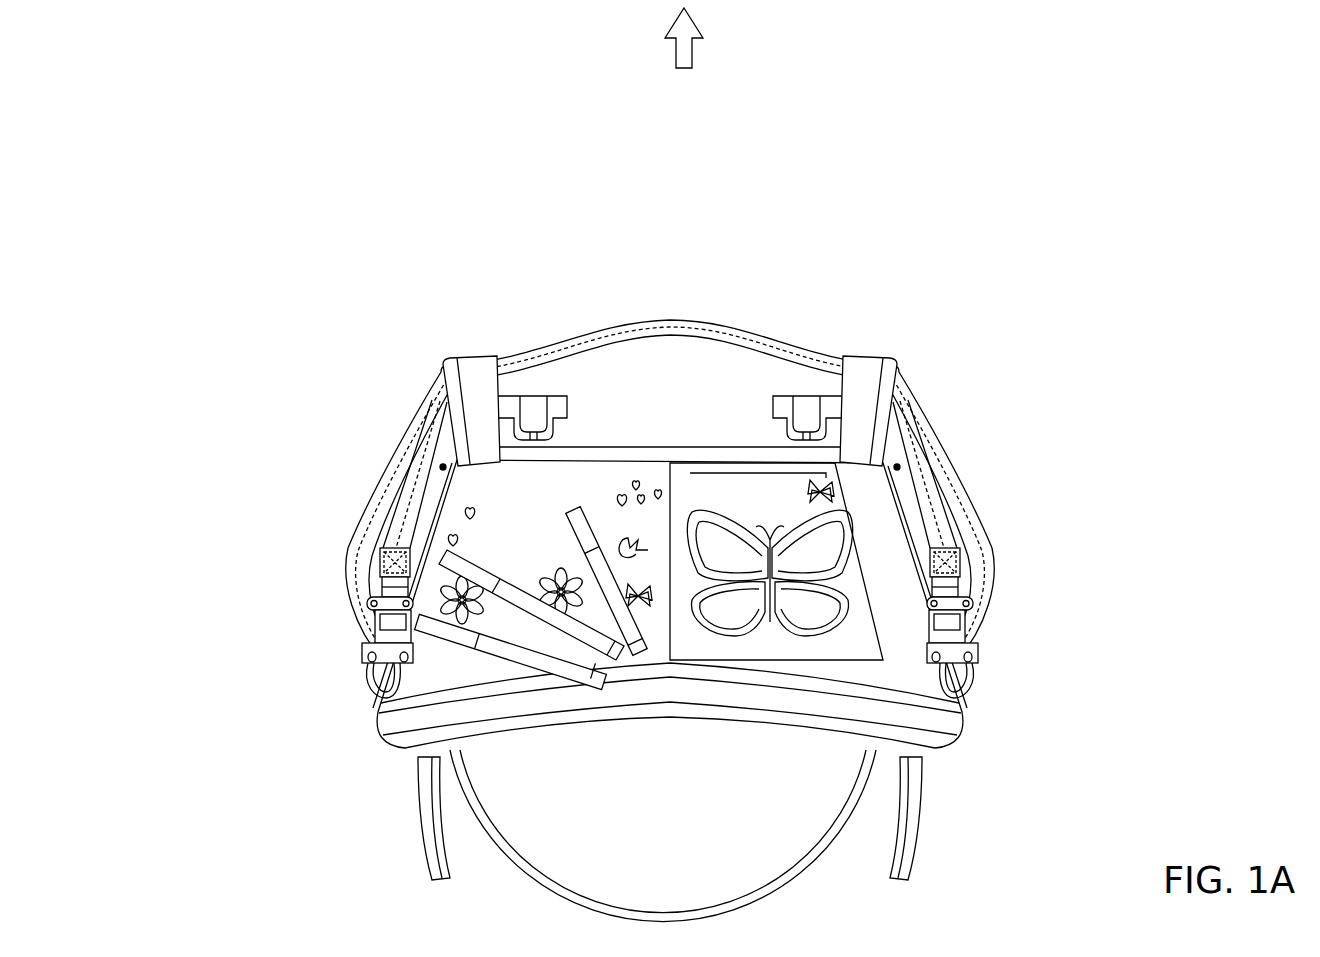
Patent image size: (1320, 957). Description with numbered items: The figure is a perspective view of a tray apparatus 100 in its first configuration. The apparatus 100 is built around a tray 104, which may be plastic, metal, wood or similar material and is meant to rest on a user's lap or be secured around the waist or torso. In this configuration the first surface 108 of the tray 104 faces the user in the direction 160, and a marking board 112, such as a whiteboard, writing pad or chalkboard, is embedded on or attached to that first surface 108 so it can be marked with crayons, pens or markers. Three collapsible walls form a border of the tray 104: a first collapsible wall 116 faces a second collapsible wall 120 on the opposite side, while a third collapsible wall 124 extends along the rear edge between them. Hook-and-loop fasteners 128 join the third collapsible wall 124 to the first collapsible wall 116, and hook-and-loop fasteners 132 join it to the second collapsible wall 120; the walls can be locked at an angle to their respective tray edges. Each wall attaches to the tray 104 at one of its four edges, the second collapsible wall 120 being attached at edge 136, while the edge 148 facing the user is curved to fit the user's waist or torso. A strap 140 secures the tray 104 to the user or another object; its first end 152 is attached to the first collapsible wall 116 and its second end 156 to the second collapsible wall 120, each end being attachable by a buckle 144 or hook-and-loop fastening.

The tray apparatus 100 is at (238, 108).
The tray 104 is at (633, 712).
The first surface 108 is at (460, 668).
The marking board 112 is at (763, 510).
The first collapsible wall 116 is at (353, 537).
The second collapsible wall 120 is at (990, 553).
The third collapsible wall 124 is at (580, 343).
The hook-and-loop fasteners 128 is at (473, 393).
The hook-and-loop fasteners 132 is at (868, 415).
The edge 136 is at (942, 735).
The strap 140 is at (663, 910).
The buckle 144 is at (977, 650).
The edge 148 is at (747, 705).
The first end 152 is at (373, 693).
The second end 156 is at (963, 703).
The direction 160 is at (688, 60).